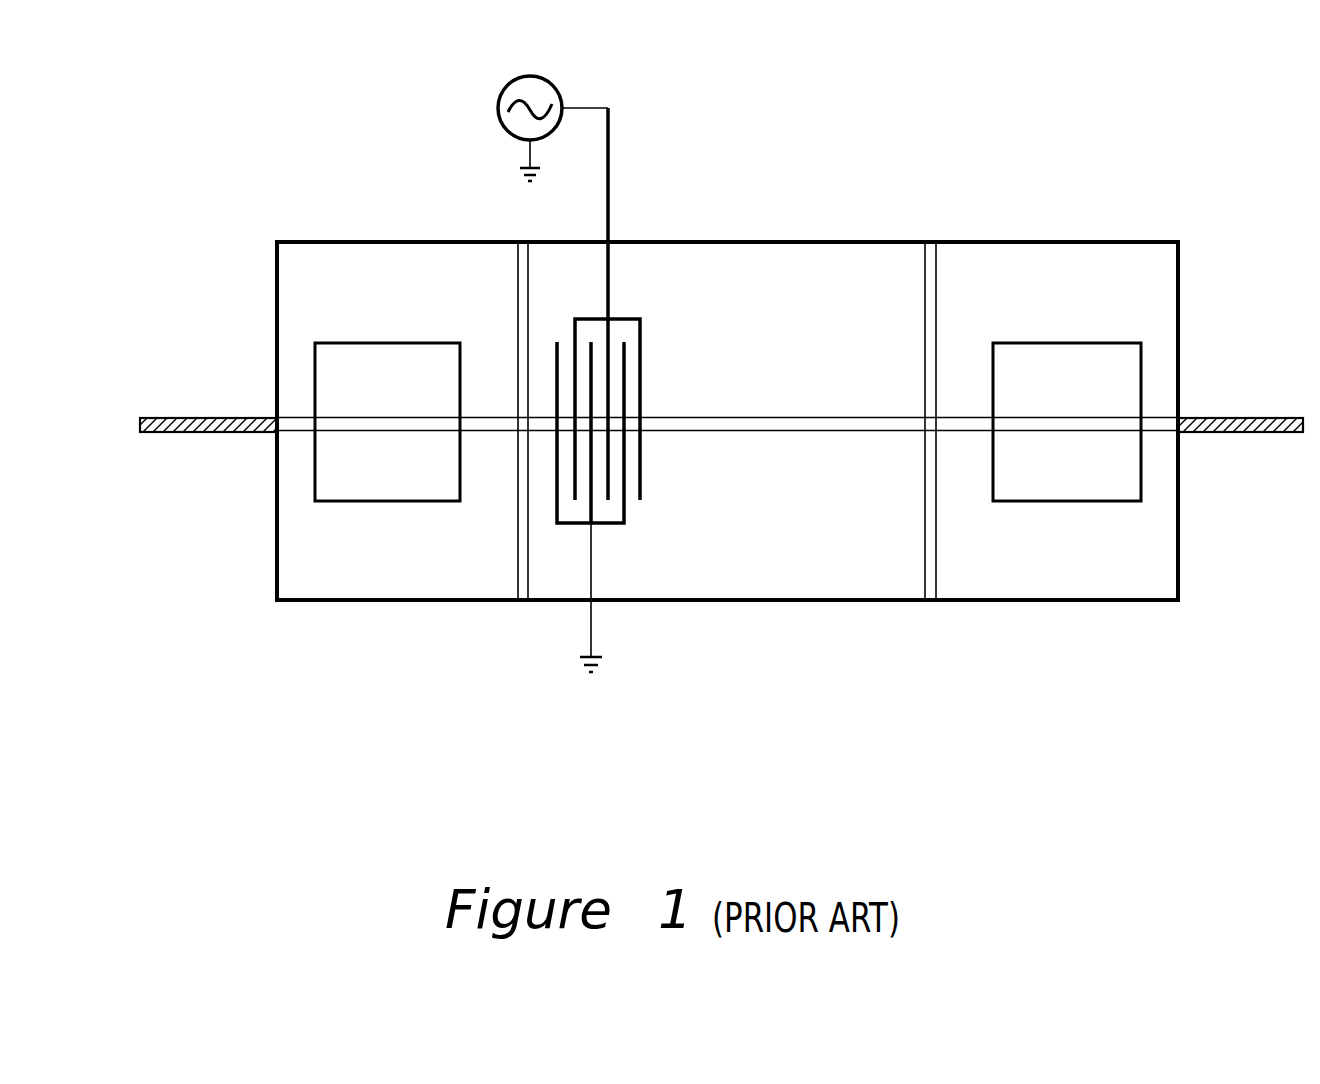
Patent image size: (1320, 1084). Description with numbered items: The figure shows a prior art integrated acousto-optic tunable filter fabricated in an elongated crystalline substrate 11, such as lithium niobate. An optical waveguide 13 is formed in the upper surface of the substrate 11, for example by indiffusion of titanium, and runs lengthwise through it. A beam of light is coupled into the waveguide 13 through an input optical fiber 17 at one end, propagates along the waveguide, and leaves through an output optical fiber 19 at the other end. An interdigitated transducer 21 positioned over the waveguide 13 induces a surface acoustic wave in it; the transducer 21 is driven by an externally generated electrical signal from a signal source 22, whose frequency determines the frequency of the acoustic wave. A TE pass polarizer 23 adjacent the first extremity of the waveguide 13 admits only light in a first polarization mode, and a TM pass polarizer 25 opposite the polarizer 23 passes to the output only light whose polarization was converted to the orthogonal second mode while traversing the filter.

The crystalline substrate 11 is at (820, 601).
The optical waveguide 13 is at (727, 425).
The input optical fiber 17 is at (192, 417).
The output optical fiber 19 is at (1260, 417).
The interdigitated transducer 21 is at (619, 330).
The signal source 22 is at (504, 90).
The TE pass polarizer 23 is at (412, 343).
The TM pass polarizer 25 is at (1095, 357).